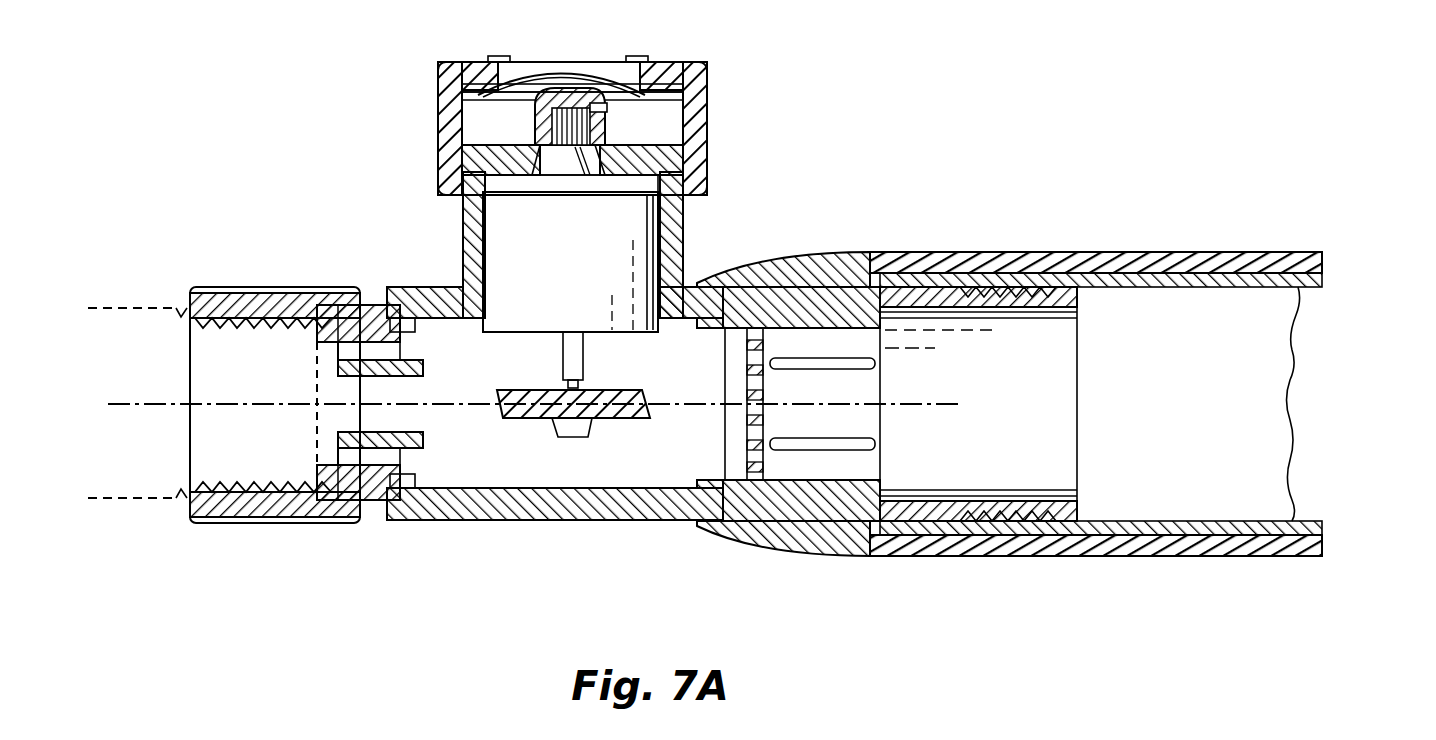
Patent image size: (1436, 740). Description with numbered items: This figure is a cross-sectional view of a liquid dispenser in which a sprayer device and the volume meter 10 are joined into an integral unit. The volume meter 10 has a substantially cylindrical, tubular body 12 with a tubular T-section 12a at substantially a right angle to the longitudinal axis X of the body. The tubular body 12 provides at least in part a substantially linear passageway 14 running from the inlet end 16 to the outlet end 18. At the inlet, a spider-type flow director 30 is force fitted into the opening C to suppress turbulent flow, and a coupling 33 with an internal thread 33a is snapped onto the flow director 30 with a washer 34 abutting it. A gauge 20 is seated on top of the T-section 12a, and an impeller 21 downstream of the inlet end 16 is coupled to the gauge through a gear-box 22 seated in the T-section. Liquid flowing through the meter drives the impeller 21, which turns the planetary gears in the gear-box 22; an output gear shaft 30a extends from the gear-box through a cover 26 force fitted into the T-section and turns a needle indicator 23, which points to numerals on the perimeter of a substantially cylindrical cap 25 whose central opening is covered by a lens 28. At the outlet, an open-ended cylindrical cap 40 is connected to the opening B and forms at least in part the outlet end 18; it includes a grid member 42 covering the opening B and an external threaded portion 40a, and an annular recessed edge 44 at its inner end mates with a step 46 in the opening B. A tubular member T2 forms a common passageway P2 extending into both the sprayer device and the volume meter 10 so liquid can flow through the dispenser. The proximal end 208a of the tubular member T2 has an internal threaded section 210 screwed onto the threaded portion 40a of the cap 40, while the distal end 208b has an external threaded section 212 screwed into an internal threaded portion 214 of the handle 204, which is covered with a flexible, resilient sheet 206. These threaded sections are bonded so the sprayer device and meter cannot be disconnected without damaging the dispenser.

The volume meter 10 is at (755, 76).
The tubular body 12 is at (433, 520).
The T-section 12a is at (462, 262).
The passageway 14 is at (672, 448).
The inlet end 16 is at (190, 300).
The outlet end 18 is at (915, 290).
The gauge 20 is at (716, 126).
The impeller 21 is at (614, 420).
The gear-box 22 is at (590, 268).
The needle indicator 23 is at (618, 100).
The cylindrical cap 25 is at (690, 62).
The cover 26 is at (525, 145).
The lens 28 is at (535, 70).
The flow director 30 is at (373, 300).
The output gear shaft 30a is at (565, 100).
The coupling 33 is at (222, 290).
The internal thread 33a is at (243, 312).
The washer 34 is at (288, 296).
The cylindrical cap 40 is at (922, 521).
The external threaded portion 40a is at (840, 556).
The grid member 42 is at (800, 300).
The annular recessed edge 44 is at (748, 287).
The step 46 is at (412, 423).
The handle 204 is at (1326, 279).
The flexible, resilient sheet 206 is at (1165, 252).
The proximal end 208a is at (877, 290).
The distal end 208b is at (1060, 290).
The internal threaded section 210 is at (840, 290).
The external threaded section 212 is at (1015, 290).
The internal threaded portion 214 is at (1064, 547).
The longitudinal axis X is at (128, 405).
The opening C is at (395, 453).
The opening B is at (737, 458).
The tubular member T2 is at (950, 253).
The common passageway P2 is at (634, 456).